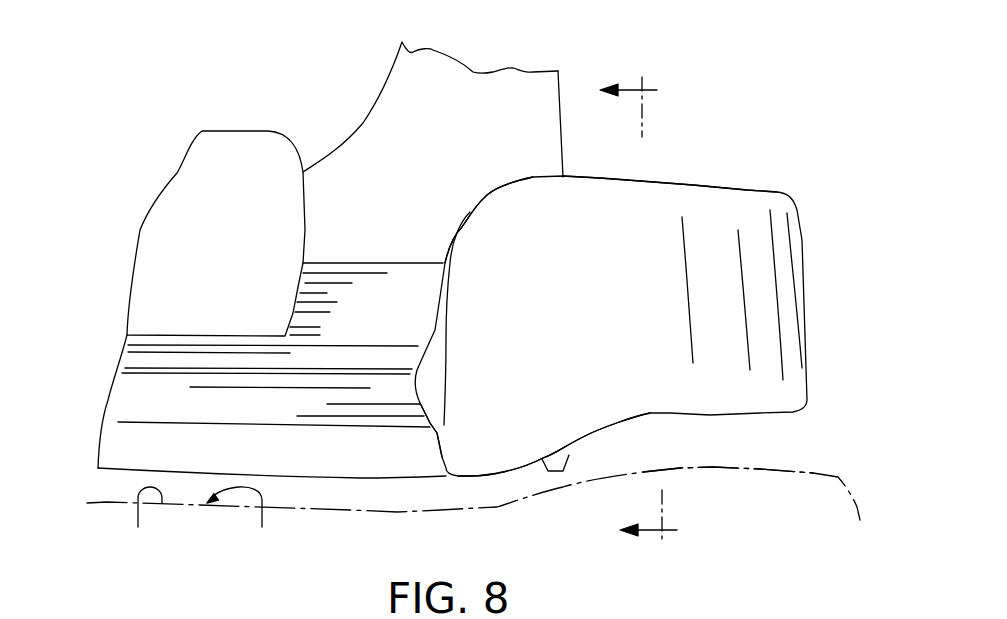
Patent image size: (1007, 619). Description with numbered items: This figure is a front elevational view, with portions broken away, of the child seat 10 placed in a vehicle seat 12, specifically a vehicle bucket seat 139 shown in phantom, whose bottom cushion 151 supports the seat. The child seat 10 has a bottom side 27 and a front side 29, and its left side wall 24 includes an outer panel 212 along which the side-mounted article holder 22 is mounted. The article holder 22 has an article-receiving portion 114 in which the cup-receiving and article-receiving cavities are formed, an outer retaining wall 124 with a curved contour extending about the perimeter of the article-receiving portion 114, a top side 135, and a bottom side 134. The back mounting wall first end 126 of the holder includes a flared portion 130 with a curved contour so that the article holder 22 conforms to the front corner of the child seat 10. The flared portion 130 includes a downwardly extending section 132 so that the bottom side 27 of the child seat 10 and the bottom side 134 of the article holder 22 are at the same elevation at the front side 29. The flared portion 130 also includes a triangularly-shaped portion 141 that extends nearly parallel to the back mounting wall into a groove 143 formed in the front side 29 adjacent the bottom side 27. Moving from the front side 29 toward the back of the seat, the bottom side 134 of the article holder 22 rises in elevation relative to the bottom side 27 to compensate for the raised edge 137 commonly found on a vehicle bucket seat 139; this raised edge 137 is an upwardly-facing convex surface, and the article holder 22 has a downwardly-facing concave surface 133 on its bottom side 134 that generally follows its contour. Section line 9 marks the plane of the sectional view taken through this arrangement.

The child seat 10 is at (293, 115).
The outer panel 212 is at (563, 97).
The left side wall 24 is at (563, 133).
The front side 29 is at (218, 464).
The bottom side 27 is at (350, 478).
The groove 143 is at (335, 368).
The article holder 22 is at (805, 196).
The back mounting wall first end 126 is at (467, 222).
The flared portion 130 is at (435, 343).
The triangularly-shaped portion 141 is at (437, 393).
The top side 135 is at (683, 183).
The article-receiving portion 114 is at (756, 180).
The outer retaining wall 124 is at (808, 293).
The downwardly-facing concave surface 133 is at (600, 429).
The bottom side 134 is at (545, 473).
The downwardly extending section 132 is at (465, 452).
The vehicle seat 12 is at (99, 490).
The bottom cushion 151 is at (142, 522).
The vehicle bucket seat 139 is at (242, 522).
The raised edge 137 is at (713, 466).
The section line 9- 9 is at (648, 312).